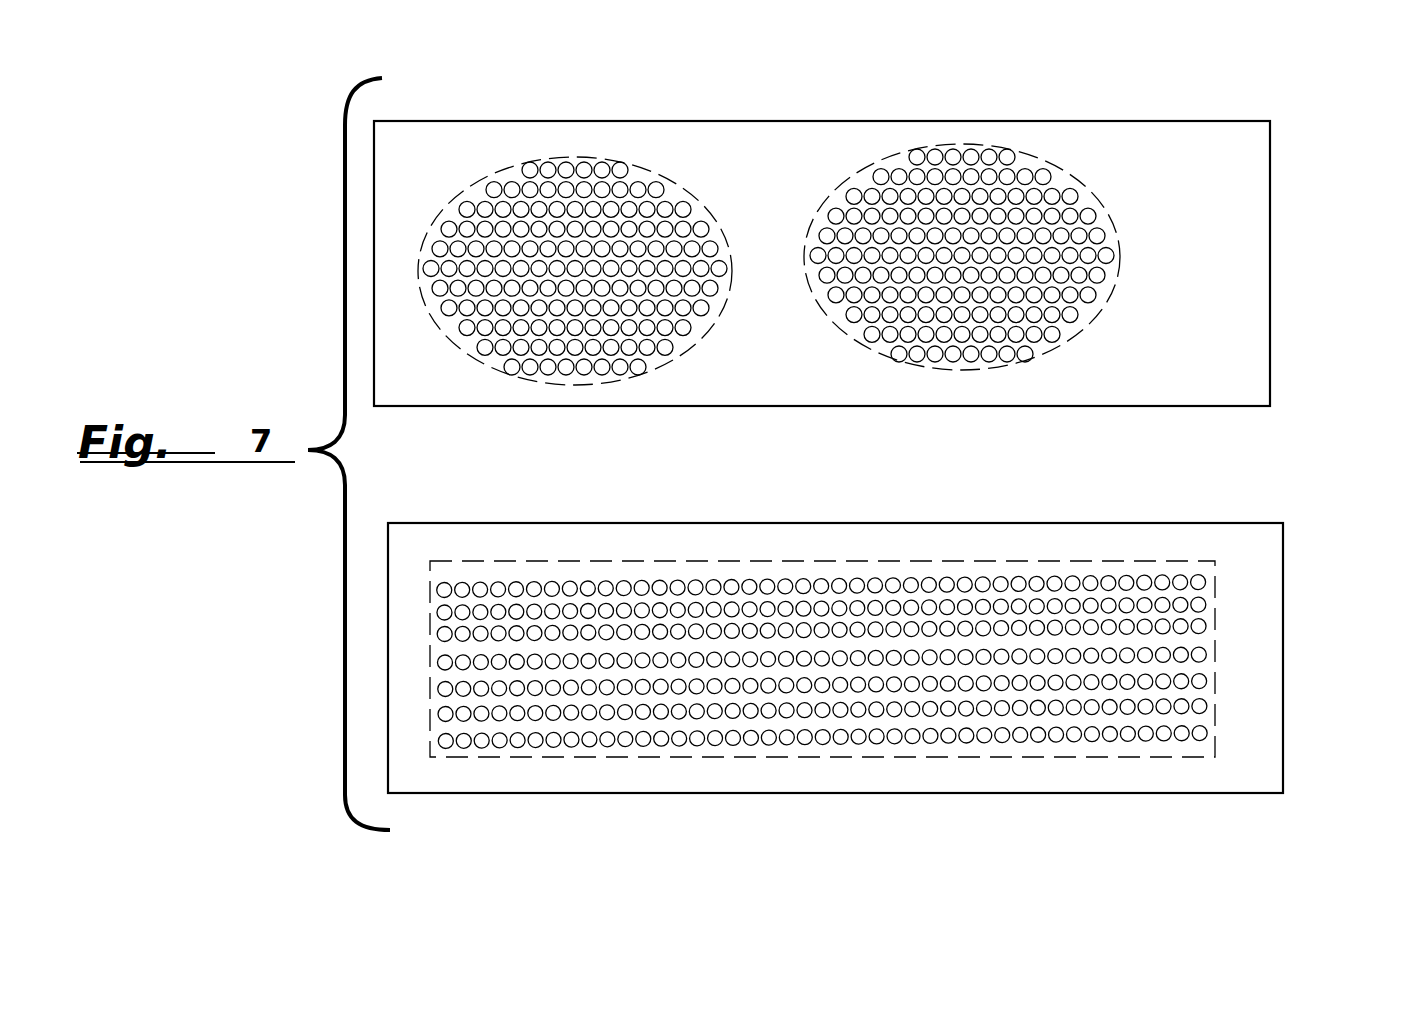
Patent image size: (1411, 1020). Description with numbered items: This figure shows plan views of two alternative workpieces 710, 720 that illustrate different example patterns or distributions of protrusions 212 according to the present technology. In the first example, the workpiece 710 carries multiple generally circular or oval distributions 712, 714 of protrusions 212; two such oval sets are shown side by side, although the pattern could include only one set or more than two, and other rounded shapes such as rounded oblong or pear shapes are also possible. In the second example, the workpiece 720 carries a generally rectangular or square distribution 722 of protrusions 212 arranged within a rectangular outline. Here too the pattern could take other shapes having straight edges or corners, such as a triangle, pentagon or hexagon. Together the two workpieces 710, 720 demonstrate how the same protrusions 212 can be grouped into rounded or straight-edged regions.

The holes / perforations 212 is at (503, 192).
The first panel 710 is at (1336, 201).
The first perforated region (left oval) 712 is at (723, 198).
The second perforated region (right oval) 714 is at (1039, 157).
The second panel 720 is at (1336, 555).
The rectangular perforated region 722 is at (543, 758).